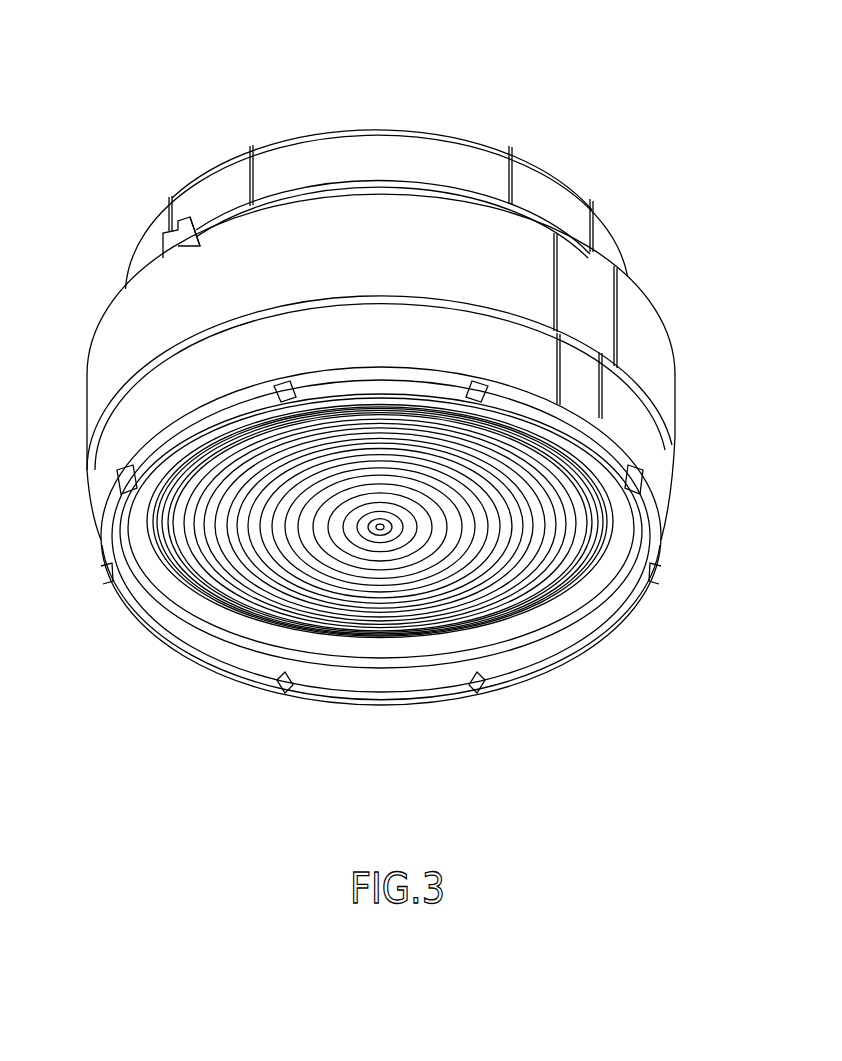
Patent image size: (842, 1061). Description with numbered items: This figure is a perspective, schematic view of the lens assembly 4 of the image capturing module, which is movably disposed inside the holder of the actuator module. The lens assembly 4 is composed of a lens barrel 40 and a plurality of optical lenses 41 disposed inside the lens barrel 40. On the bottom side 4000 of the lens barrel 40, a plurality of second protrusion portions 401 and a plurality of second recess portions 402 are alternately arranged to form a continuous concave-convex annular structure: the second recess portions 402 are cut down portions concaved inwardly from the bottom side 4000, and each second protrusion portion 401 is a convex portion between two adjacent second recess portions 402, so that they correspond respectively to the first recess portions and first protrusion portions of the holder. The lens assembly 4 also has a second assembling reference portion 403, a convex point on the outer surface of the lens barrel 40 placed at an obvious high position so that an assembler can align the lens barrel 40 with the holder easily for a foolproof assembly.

The lens assembly 4 is at (70, 33).
The lens barrel 40 is at (92, 342).
The second protrusion portion 401 is at (390, 372).
The second recess portion 402 is at (181, 414).
The second assembling reference portion 403 is at (162, 239).
The bottom side 4000 is at (435, 697).
The optical lens 41 is at (518, 563).